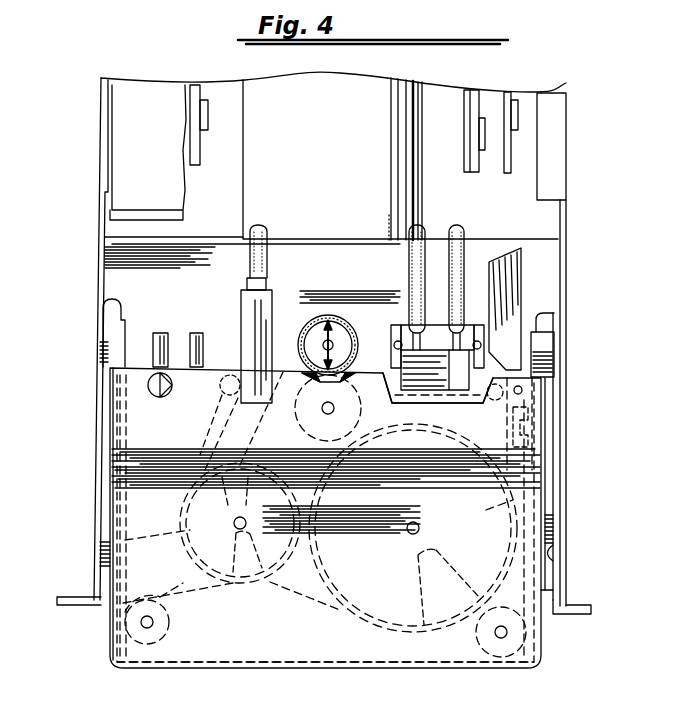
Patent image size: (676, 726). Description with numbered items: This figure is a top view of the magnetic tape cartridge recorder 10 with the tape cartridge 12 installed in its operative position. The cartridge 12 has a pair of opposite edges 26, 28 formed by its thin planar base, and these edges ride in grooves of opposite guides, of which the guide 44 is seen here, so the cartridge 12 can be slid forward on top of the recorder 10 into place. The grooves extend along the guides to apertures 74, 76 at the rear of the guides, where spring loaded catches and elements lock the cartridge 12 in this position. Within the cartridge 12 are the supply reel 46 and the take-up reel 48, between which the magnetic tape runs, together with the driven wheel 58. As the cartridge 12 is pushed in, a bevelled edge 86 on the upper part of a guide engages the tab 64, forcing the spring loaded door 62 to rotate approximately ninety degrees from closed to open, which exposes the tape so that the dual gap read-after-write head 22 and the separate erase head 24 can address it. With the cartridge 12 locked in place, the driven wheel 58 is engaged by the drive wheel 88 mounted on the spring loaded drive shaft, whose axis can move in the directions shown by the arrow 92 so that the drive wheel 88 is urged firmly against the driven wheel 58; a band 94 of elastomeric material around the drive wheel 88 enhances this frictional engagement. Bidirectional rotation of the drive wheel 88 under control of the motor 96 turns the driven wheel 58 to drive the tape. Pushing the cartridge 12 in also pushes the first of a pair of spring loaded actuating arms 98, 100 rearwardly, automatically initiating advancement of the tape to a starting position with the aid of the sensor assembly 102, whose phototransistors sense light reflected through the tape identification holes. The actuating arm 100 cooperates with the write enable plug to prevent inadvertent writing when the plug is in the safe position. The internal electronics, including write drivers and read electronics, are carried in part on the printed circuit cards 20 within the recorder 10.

The magnetic tape cartridge recorder 10 is at (583, 282).
The tape cartridge 12 is at (543, 481).
The printed circuit cards 20 is at (513, 162).
The dual gap read-after-write head 22 is at (415, 358).
The erase head 24 is at (455, 385).
The edge of cartridge 26 is at (566, 583).
The edge of cartridge 28 is at (112, 496).
The guide 44 is at (104, 453).
The supply reel 46 is at (550, 505).
The take-up reel 48 is at (115, 540).
The driven wheel 58 is at (294, 420).
The door 62 is at (528, 292).
The tab 64 is at (530, 412).
The aperture 74 is at (540, 325).
The aperture 76 is at (105, 308).
The bevelled edge 86 is at (553, 556).
The drive wheel 88 is at (322, 316).
The arrow 92 is at (326, 331).
The band of elastomeric material 94 is at (350, 325).
The motor 96 is at (347, 189).
The actuating arm 98 is at (205, 328).
The actuating arm 100 is at (152, 340).
The sensor assembly 102 is at (248, 292).